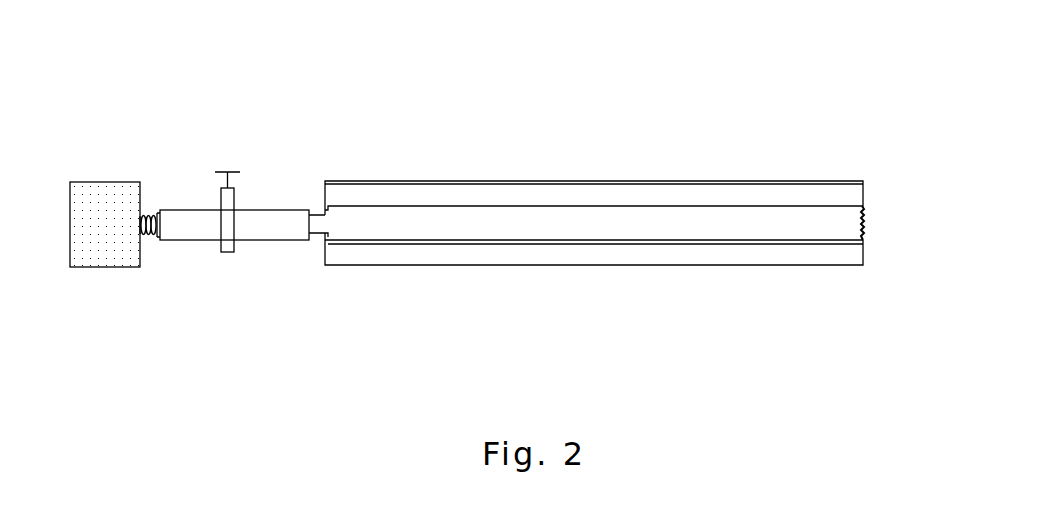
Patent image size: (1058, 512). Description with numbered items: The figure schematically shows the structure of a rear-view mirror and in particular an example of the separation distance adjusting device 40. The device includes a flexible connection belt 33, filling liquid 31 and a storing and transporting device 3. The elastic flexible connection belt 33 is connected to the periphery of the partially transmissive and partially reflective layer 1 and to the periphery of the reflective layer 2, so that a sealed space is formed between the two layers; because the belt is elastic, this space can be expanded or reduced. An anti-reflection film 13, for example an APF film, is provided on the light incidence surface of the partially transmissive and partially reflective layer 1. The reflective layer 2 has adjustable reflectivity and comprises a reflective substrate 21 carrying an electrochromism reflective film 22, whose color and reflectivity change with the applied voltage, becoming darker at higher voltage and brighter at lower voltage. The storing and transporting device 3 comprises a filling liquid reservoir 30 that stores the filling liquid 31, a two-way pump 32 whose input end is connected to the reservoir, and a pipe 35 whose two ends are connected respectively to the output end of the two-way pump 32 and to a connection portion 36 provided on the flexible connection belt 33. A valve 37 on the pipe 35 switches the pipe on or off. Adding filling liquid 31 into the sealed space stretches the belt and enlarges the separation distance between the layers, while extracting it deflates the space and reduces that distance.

The partially transmissive and partially reflective layer 1 is at (445, 197).
The anti-reflection film 13 is at (595, 183).
The reflective layer 2 is at (475, 315).
The reflective substrate 21 is at (383, 252).
The electrochromism reflective film 22 is at (410, 241).
The storing and transporting device 3 is at (347, 313).
The filling liquid reservoir 30 is at (101, 270).
The filling liquid 31 is at (97, 195).
The two-way pump 32 is at (143, 236).
The flexible connection belt 33 is at (865, 213).
The pipe 35 is at (258, 241).
The connection portion 36 is at (320, 235).
The valve 37 is at (226, 253).
The separation distance adjusting device 40 is at (252, 143).